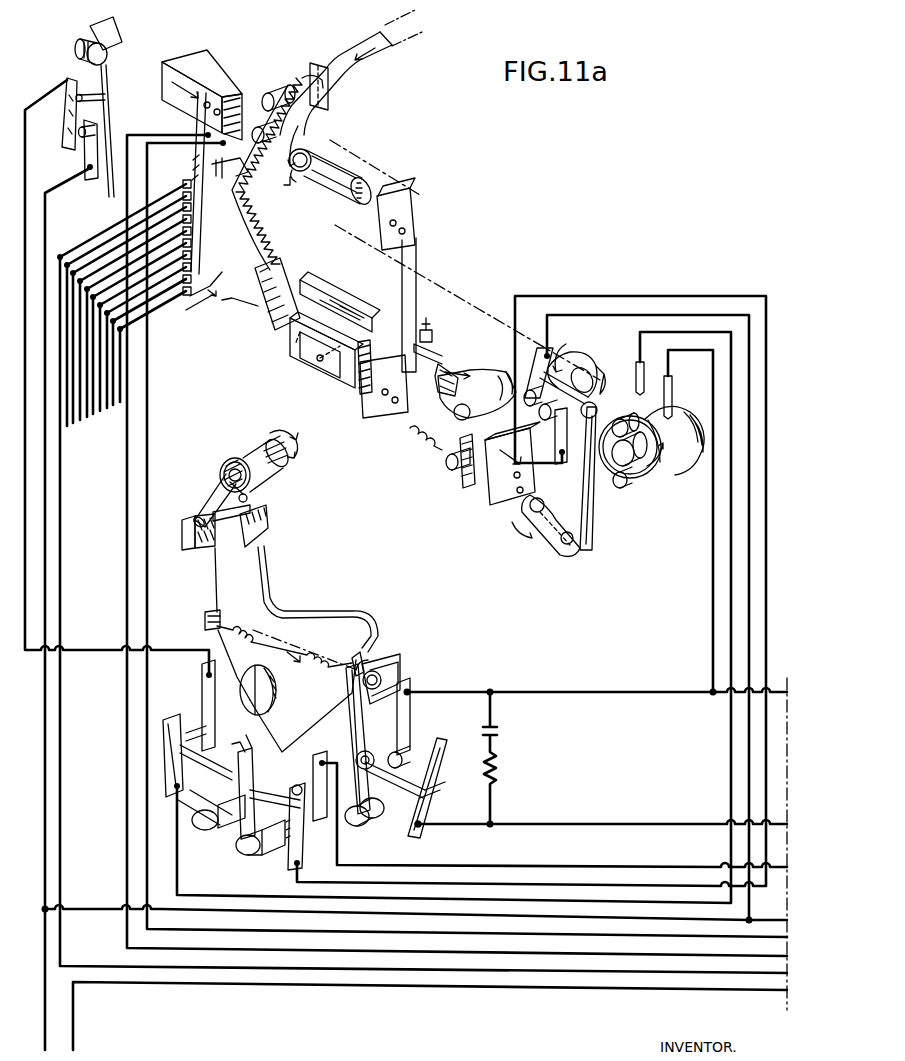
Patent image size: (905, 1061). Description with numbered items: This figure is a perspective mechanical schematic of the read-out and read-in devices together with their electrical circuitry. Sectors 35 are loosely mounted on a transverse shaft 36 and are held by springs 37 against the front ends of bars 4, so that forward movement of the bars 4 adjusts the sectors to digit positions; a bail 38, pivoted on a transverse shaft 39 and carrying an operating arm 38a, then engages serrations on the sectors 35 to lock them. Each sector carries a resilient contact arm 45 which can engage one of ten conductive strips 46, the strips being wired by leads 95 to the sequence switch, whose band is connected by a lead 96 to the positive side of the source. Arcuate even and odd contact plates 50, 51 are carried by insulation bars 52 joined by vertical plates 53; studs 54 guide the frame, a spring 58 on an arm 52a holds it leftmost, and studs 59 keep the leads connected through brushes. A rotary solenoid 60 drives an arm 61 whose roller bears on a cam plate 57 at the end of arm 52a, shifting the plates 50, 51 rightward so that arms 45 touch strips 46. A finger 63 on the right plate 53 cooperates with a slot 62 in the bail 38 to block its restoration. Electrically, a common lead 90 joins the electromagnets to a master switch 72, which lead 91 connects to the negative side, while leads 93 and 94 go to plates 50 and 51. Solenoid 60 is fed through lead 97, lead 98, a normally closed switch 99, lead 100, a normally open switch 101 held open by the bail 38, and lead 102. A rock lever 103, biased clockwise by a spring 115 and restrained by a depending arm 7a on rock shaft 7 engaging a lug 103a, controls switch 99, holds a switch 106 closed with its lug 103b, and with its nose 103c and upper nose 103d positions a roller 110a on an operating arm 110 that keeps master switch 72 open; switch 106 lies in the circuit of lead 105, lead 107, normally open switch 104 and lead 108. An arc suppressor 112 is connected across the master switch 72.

The bars 4 is at (344, 76).
The rock shaft 7 is at (224, 470).
The depending arm 7a is at (226, 490).
The sectors 35 is at (252, 214).
The transverse shaft 36 is at (360, 206).
The springs 37 is at (312, 190).
The bail 38 is at (280, 266).
The operating arm 38a is at (481, 382).
The transverse shaft 39 is at (292, 322).
The resilient contact arm 45 is at (230, 173).
The conductive strips 46 is at (204, 302).
The even digit contact plate 50 is at (235, 100).
The odd digit contact plate 51 is at (200, 152).
The insulation bars 52 is at (184, 62).
The arm 52a is at (326, 380).
The vertical plates 53 is at (416, 274).
The studs 54 is at (448, 466).
The cam plate 57 is at (598, 512).
The spring 58 is at (418, 444).
The studs 59 is at (214, 112).
The rotary solenoid 60 is at (674, 486).
The rotary operating arm 61 is at (556, 546).
The slot 62 is at (442, 360).
The finger 63 is at (426, 328).
The master switch 72 is at (431, 731).
The common lead 90 is at (549, 823).
The lead 91 is at (537, 692).
The lead 93 is at (154, 422).
The lead 94 is at (125, 464).
The leads 95 is at (126, 352).
The lead 96 is at (70, 908).
The lead 97 is at (715, 594).
The lead 98 is at (176, 872).
The normally closed switch 99 is at (189, 704).
The lead 100 is at (34, 94).
The normally open switch 101 is at (59, 138).
The lead 102 is at (44, 734).
The rock lever 103 is at (262, 598).
The lugs 103a is at (200, 560).
The lug 103b is at (230, 744).
The nose 103c is at (342, 692).
The upper nose 103d is at (364, 657).
The normally open switch 104 is at (570, 348).
The lead 105 is at (552, 867).
The normally closed switch 106 is at (299, 777).
The lead 107 is at (780, 534).
The lead 108 is at (556, 314).
The operating arm 110 is at (350, 740).
The roller 110a is at (394, 666).
The arc suppressor 112 is at (500, 750).
The spring 115 is at (312, 632).